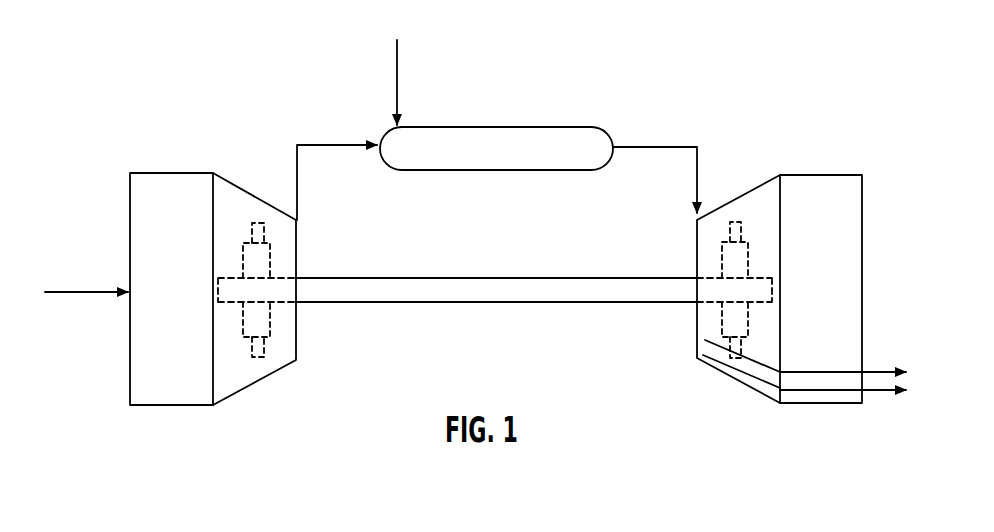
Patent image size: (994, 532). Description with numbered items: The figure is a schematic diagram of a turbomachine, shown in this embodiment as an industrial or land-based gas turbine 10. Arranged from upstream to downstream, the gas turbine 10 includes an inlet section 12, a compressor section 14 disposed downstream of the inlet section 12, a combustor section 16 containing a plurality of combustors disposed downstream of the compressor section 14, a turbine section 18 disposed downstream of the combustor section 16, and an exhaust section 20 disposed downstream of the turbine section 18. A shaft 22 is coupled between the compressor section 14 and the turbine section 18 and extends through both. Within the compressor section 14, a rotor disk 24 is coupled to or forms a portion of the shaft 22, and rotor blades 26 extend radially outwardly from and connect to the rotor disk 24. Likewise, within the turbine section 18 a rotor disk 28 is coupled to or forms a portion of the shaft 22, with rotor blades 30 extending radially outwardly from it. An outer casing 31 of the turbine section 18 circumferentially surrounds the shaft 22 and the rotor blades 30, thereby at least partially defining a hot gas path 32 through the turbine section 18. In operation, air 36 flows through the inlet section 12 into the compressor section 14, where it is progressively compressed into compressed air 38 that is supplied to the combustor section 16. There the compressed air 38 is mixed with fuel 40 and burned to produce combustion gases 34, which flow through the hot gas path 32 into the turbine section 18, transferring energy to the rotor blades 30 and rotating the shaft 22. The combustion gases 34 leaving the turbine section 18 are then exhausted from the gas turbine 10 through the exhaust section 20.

The gas turbine 10 is at (326, 43).
The inlet section 12 is at (156, 172).
The compressor section 14 is at (243, 189).
The combustor section 16 is at (553, 126).
The turbine section 18 is at (750, 188).
The exhaust section 20 is at (847, 174).
The shaft 22 is at (450, 304).
The rotor disk 24 is at (245, 248).
The rotor blade 26 is at (250, 232).
The rotor disk 28 is at (720, 270).
The rotor blade 30 is at (735, 221).
The outer casing 31 is at (770, 402).
The hot gas path 32 is at (744, 386).
The combustion gases 34 is at (668, 149).
The air 36 is at (91, 294).
The compressed air 38 is at (330, 148).
The fuel 40 is at (398, 85).